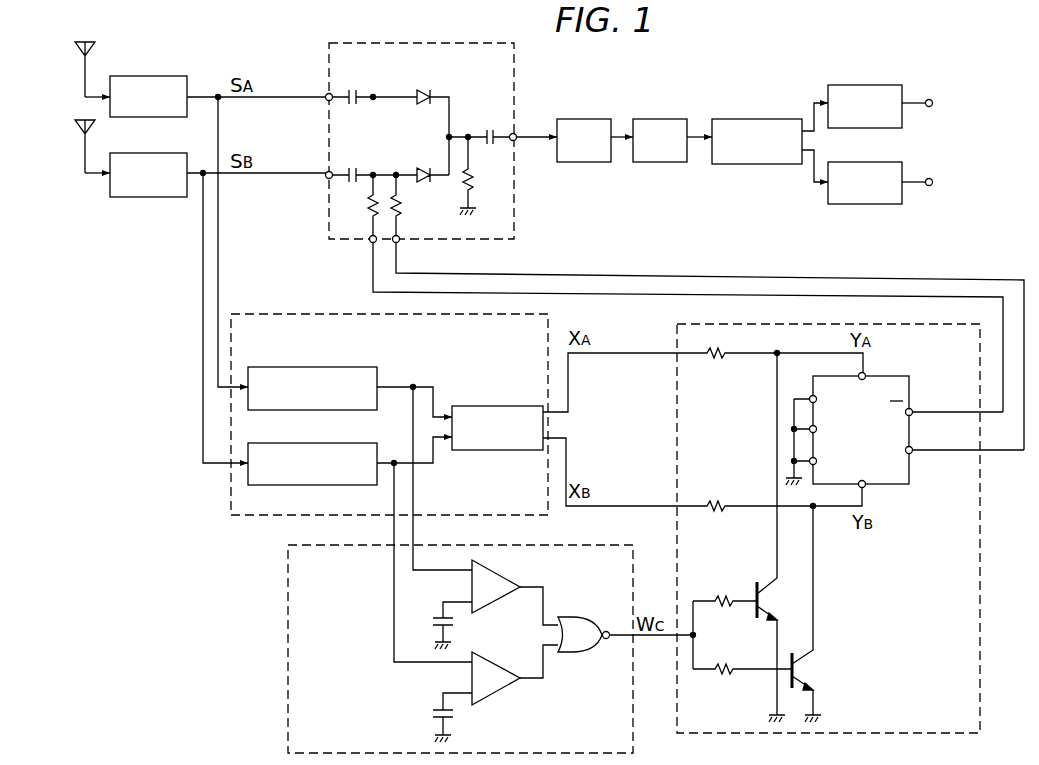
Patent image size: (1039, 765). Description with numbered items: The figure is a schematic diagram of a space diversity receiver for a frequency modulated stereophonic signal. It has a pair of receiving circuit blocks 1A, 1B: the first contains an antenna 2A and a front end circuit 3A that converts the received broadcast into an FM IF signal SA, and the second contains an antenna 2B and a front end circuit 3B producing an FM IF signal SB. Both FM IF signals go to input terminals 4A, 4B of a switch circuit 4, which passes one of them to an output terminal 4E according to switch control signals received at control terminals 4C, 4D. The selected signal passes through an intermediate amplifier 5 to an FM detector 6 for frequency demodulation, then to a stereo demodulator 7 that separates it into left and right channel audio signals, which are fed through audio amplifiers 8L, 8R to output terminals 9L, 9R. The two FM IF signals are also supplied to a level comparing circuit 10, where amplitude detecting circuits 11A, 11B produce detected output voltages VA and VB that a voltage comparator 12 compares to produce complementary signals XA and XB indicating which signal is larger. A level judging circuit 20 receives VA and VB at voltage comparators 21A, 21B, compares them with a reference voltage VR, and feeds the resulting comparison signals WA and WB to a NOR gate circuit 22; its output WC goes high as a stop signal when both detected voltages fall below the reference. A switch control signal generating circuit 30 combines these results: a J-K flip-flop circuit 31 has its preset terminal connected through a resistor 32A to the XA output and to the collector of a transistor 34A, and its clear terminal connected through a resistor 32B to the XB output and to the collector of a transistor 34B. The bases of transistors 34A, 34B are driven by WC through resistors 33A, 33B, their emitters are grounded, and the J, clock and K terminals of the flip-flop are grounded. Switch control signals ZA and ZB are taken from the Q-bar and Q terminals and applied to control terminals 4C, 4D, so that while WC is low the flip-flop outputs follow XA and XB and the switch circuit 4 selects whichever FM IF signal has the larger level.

The receiving circuit block 1A is at (75, 98).
The receiving circuit block 1B is at (75, 175).
The antenna 2A is at (97, 50).
The antenna 2B is at (95, 124).
The front end circuit 3A is at (152, 76).
The front end circuit 3B is at (158, 153).
The switch circuit 4 is at (480, 43).
The input terminal 4A is at (326, 93).
The input terminal 4B is at (326, 171).
The control terminal 4C is at (370, 243).
The control terminal 4D is at (399, 243).
The output terminal 4E is at (516, 133).
The intermediate amplifier 5 is at (585, 119).
The FM detector 6 is at (663, 119).
The stereo demodulator 7 is at (771, 119).
The audio amplifier 8L is at (862, 85).
The audio amplifier 8R is at (862, 162).
The output terminal 9L is at (933, 103).
The output terminal 9R is at (933, 182).
The level comparing circuit 10 is at (275, 313).
The amplitude detecting circuit 11A is at (290, 366).
The amplitude detecting circuit 11B is at (290, 442).
The voltage comparator 12 is at (507, 406).
The level judging circuit 20 is at (595, 533).
The voltage comparator 21A is at (497, 576).
The voltage comparator 21B is at (508, 647).
The NOR gate circuit 22 is at (576, 653).
The switch control signal generating circuit 30 is at (928, 331).
The J-K flip-flop circuit 31 is at (887, 376).
The resistor 32A is at (715, 362).
The resistor 32B is at (715, 500).
The resistor 33A is at (721, 596).
The resistor 33B is at (721, 664).
The transistor 34A is at (763, 603).
The transistor 34B is at (800, 671).